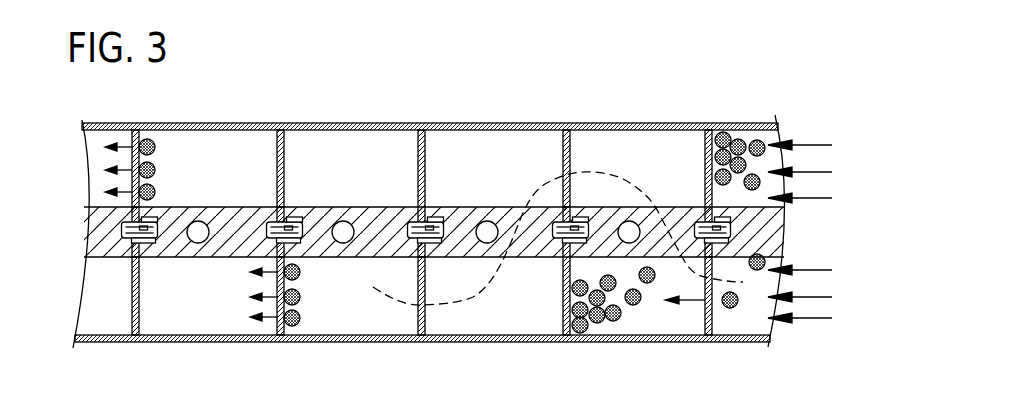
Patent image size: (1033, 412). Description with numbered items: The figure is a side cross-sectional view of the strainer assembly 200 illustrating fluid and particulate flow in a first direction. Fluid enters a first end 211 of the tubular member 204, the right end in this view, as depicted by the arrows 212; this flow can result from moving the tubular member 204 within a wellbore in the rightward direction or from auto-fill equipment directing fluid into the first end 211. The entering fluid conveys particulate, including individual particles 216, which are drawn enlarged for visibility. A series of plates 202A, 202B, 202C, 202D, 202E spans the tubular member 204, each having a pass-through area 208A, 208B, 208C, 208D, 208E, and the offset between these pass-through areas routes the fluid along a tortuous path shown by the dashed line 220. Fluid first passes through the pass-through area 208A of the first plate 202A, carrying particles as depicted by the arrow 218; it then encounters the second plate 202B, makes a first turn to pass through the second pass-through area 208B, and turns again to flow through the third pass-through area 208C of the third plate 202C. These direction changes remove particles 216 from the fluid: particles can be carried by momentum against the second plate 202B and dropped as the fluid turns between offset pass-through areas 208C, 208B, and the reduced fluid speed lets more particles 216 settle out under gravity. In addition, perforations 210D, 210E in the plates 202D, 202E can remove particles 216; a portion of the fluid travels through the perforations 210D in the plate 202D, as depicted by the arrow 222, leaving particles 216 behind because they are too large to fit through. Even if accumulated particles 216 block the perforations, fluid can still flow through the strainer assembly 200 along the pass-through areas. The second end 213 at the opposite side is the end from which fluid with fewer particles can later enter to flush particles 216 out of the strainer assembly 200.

The strainer assembly 200 is at (418, 71).
The first plate 202A is at (706, 135).
The second plate 202B is at (566, 308).
The third plate 202C is at (426, 142).
The plate 202D is at (285, 134).
The plate 202E is at (140, 134).
The tubular member 204 is at (624, 124).
The first pass-through area 208A is at (713, 315).
The second pass-through area 208B is at (563, 156).
The third pass-through area 208C is at (425, 318).
The pass-through area 208D is at (284, 160).
The pass-through area 208E is at (132, 290).
The perforations 210D is at (290, 336).
The perforations 210E is at (133, 136).
The first end 211 is at (777, 334).
The arrows 212 is at (810, 146).
The second end 213 is at (105, 299).
The particles 216 is at (750, 142).
The arrow 218 is at (688, 301).
The dashed line 220 is at (468, 299).
The arrow 222 is at (132, 168).